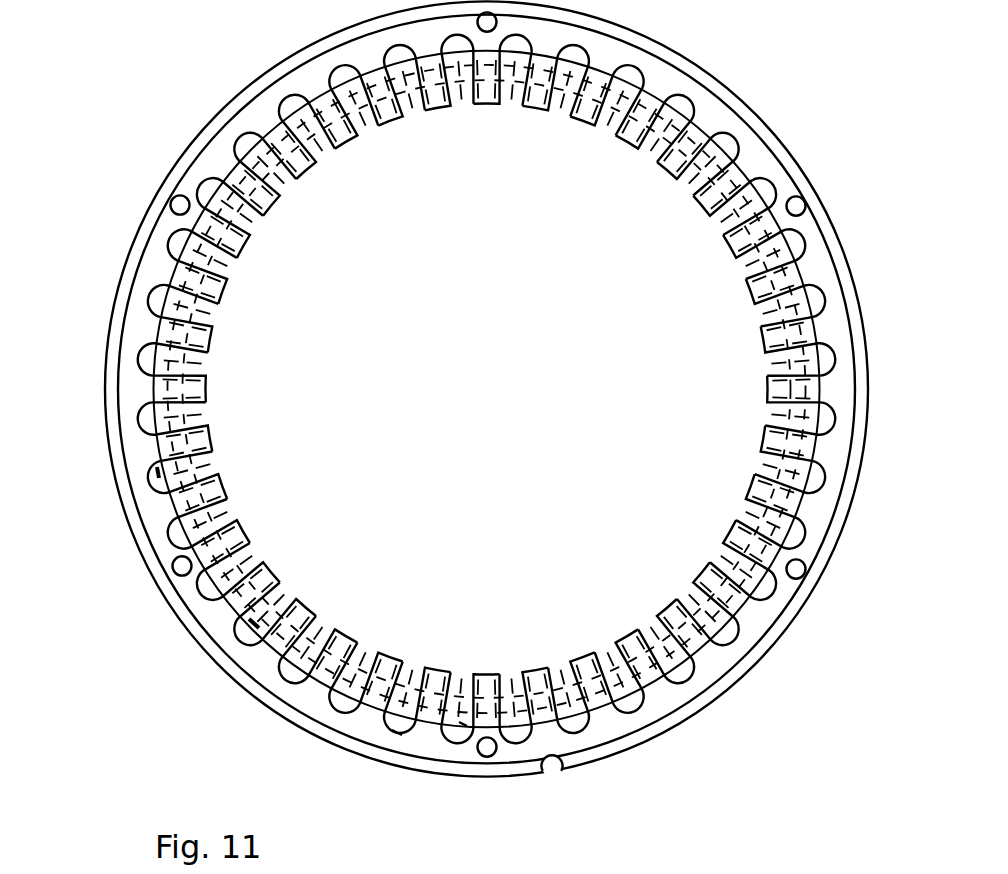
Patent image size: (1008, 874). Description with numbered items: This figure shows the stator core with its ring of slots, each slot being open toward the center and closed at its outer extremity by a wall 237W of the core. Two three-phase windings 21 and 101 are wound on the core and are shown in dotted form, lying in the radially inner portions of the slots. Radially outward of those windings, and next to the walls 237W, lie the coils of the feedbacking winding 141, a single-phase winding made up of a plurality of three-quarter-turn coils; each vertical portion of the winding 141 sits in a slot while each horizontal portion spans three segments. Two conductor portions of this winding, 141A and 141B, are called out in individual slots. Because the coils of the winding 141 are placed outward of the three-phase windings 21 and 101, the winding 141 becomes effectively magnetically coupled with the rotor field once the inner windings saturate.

The three phase winding 21 is at (157, 570).
The three phase winding 101 is at (162, 562).
The feedbacking winding 141 is at (463, 725).
The coil portion of feedbacking winding 141A is at (258, 622).
The coil portion of feedbacking winding 141B is at (158, 481).
The wall of the core 237W is at (397, 732).